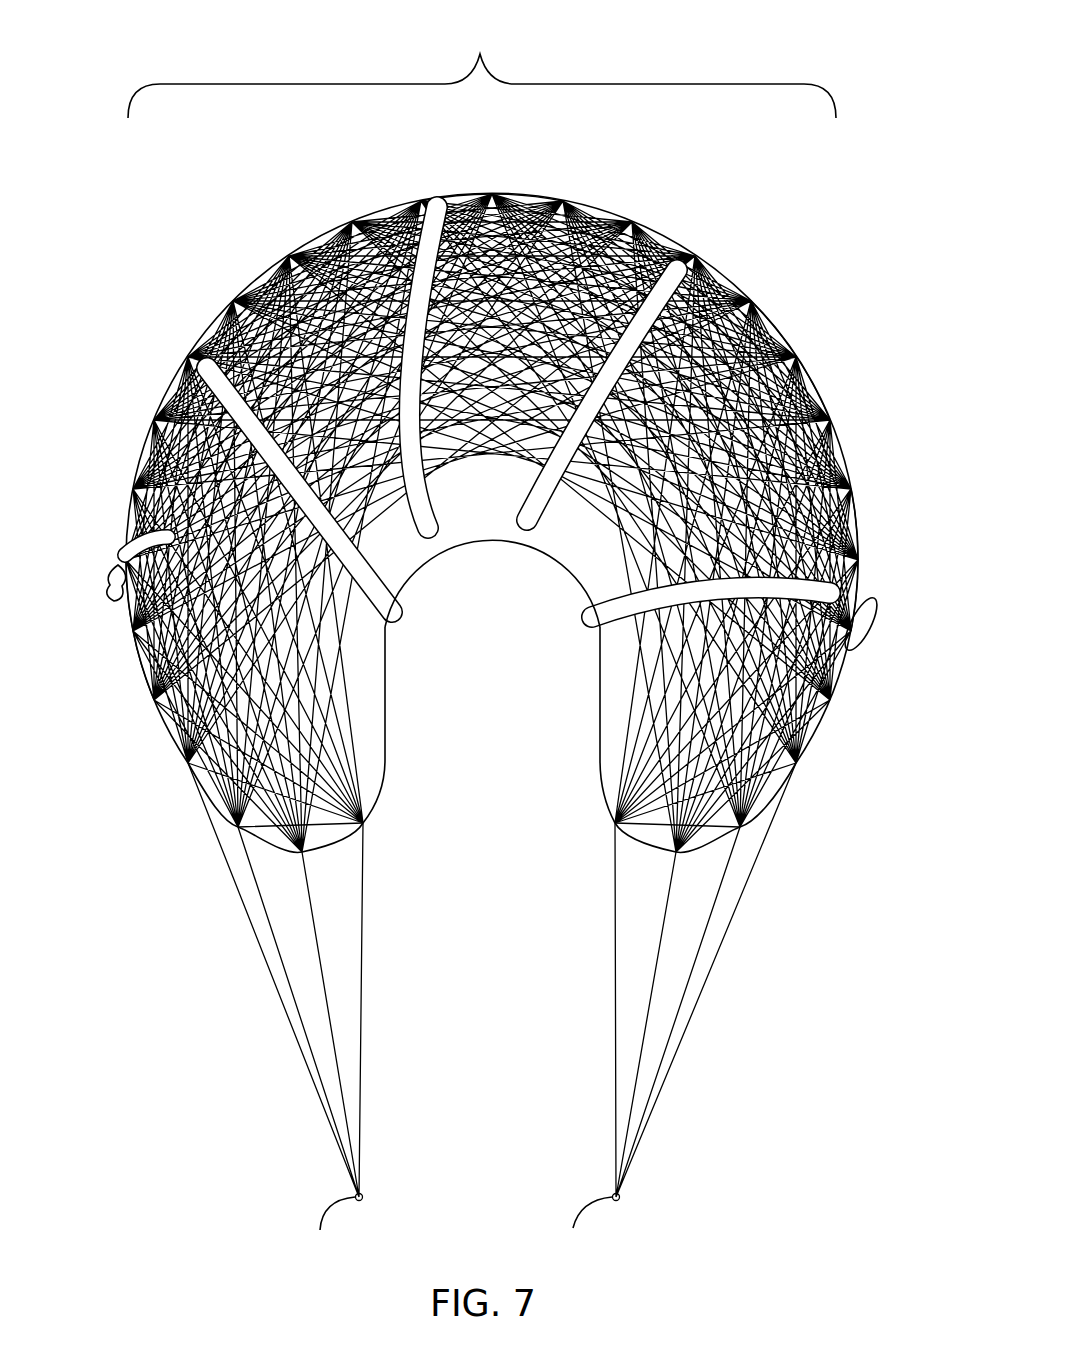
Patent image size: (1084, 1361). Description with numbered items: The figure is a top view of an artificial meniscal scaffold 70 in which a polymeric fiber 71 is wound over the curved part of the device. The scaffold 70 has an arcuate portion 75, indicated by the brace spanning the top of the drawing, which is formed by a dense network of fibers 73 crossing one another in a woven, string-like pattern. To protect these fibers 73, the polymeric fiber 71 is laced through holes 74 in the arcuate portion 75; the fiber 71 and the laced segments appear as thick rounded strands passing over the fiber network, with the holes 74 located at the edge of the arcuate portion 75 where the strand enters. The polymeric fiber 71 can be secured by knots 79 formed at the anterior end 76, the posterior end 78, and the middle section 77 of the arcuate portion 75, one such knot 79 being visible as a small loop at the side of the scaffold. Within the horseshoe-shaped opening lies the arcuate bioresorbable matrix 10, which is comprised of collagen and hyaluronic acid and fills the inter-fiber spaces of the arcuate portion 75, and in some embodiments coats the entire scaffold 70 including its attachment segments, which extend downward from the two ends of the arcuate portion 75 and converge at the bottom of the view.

The arcuate bioresorbable matrix 10 is at (470, 497).
The artificial meniscal scaffold 70 is at (147, 796).
The polymeric fiber 71 is at (438, 200).
The fibers 73 is at (781, 331).
The holes 74 is at (200, 362).
The arcuate portion 75 is at (480, 54).
The anterior end 76 is at (132, 638).
The middle section 77 is at (560, 192).
The posterior end 78 is at (862, 556).
The knots 79 is at (872, 641).